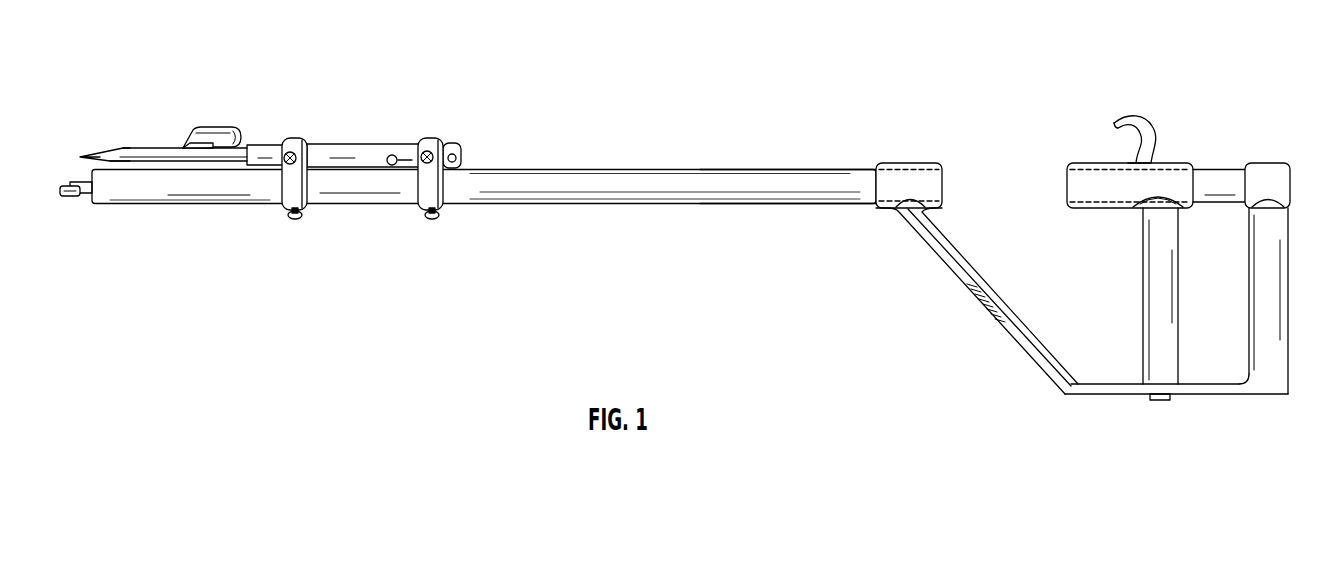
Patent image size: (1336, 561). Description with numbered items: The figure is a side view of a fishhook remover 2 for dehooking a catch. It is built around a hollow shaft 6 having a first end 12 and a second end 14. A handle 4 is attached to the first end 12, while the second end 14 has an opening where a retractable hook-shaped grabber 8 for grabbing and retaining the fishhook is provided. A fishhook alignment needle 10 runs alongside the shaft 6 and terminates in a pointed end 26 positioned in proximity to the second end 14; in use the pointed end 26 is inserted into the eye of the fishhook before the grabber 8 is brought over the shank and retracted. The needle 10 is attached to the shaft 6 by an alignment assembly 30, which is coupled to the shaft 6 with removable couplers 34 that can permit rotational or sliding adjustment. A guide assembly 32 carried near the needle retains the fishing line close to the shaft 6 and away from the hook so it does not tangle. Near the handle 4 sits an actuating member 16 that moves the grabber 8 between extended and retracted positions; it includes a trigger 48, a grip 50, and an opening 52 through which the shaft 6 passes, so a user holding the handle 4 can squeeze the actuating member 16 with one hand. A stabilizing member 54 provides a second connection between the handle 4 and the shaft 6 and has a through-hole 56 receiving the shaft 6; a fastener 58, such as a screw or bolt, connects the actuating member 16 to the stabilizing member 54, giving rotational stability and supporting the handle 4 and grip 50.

The fishhook remover 2 is at (566, 136).
The handle 4 is at (1270, 235).
The shaft 6 is at (862, 178).
The grabber 8 is at (68, 183).
The fishhook alignment needle 10 is at (142, 150).
The first end 12 is at (1230, 178).
The second end 14 is at (118, 190).
The actuating member 16 is at (1117, 155).
The pointed end 26 is at (83, 156).
The alignment assembly 30 is at (370, 150).
The guide assembly 32 is at (222, 127).
The coupler 34 is at (417, 208).
The trigger 48 is at (1152, 137).
The grip 50 is at (1158, 298).
The opening 52 is at (1057, 169).
The stabilizing member 54 is at (978, 283).
The through-hole 56 is at (868, 197).
The fastener 58 is at (1155, 400).